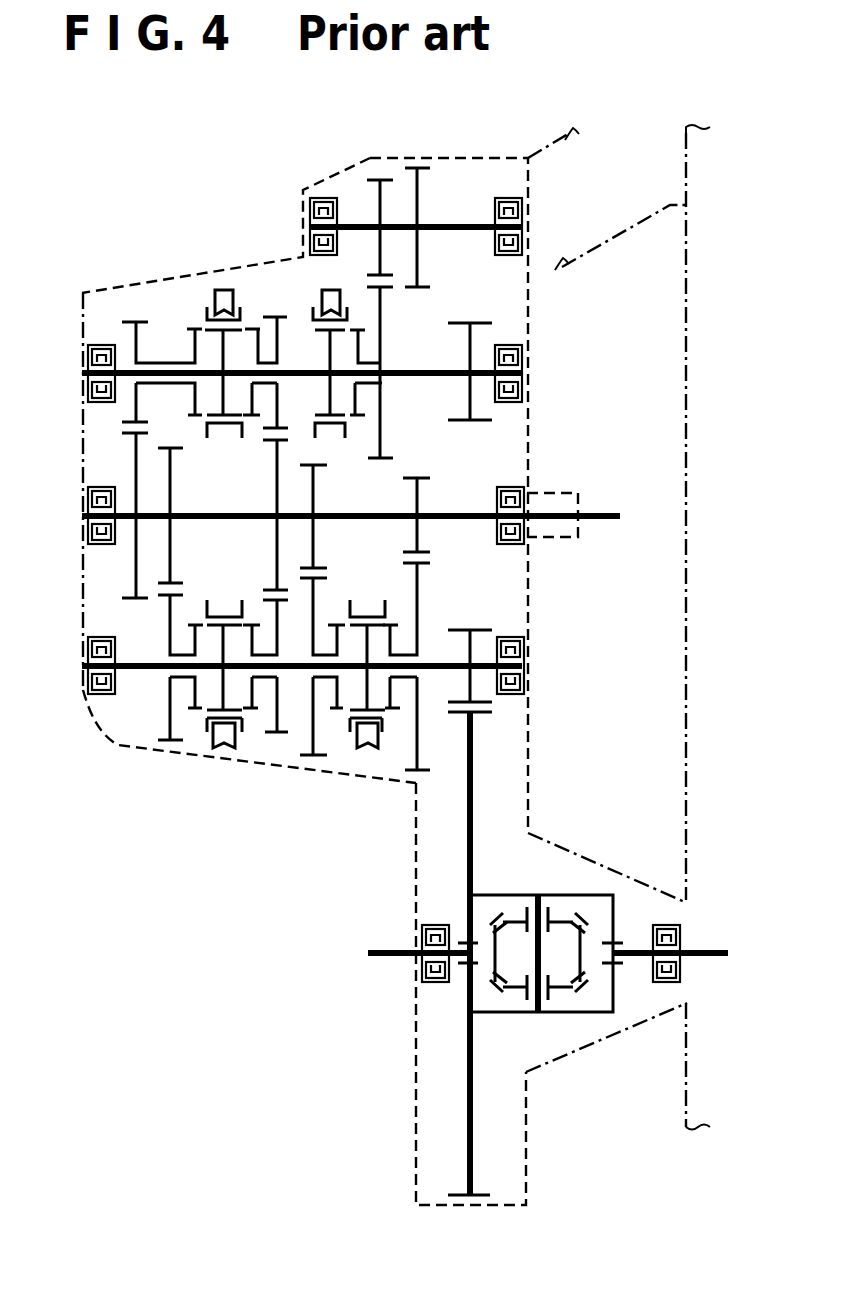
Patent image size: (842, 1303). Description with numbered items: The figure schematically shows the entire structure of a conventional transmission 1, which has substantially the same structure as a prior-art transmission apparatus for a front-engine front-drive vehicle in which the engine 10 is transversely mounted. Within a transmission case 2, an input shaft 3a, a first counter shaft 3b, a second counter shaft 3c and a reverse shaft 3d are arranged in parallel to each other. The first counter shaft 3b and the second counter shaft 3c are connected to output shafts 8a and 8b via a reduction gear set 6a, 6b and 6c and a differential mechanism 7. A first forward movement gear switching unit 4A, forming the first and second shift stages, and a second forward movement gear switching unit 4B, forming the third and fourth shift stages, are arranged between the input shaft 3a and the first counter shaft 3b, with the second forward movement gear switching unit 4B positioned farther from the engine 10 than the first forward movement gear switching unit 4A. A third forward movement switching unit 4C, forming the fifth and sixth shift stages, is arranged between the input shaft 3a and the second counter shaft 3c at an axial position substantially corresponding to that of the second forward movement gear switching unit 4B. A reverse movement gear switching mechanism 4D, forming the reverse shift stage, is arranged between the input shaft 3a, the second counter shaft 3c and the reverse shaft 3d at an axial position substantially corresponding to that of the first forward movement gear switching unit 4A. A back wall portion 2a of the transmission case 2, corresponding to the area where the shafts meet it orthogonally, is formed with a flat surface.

The transmission 1 is at (148, 947).
The transmission case 2 is at (467, 158).
The back wall portion 2a is at (78, 563).
The input shaft 3a is at (437, 510).
The first counter shaft 3b is at (428, 668).
The second counter shaft 3c is at (410, 370).
The reverse shaft 3d is at (437, 222).
The first forward movement gear switching unit 4A is at (416, 775).
The second forward movement gear switching unit 4B is at (275, 737).
The third forward movement switching unit 4C is at (137, 318).
The reverse movement gear switching mechanism 4D is at (395, 174).
The reduction gear 6a is at (463, 628).
The reduction gear 6b is at (463, 320).
The reduction gear 6c is at (470, 832).
The differential mechanism 7 is at (523, 1014).
The output shaft 8a is at (385, 963).
The output shaft 8b is at (710, 962).
The engine 10 is at (685, 139).